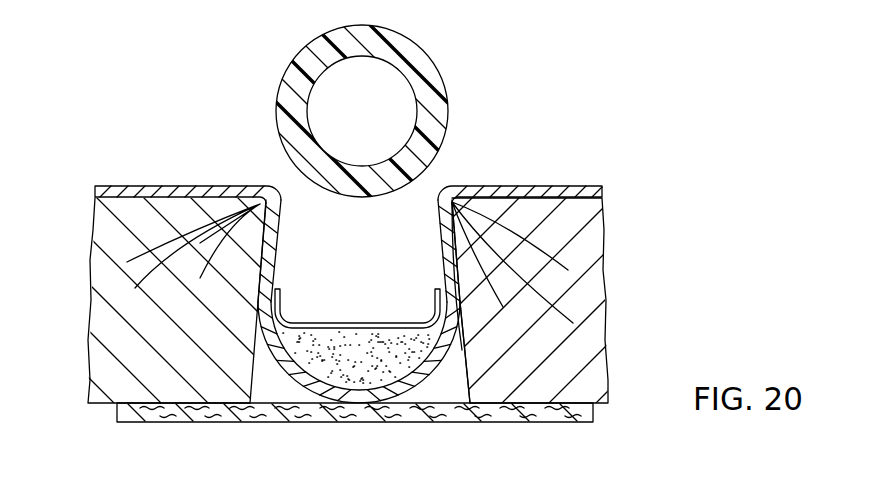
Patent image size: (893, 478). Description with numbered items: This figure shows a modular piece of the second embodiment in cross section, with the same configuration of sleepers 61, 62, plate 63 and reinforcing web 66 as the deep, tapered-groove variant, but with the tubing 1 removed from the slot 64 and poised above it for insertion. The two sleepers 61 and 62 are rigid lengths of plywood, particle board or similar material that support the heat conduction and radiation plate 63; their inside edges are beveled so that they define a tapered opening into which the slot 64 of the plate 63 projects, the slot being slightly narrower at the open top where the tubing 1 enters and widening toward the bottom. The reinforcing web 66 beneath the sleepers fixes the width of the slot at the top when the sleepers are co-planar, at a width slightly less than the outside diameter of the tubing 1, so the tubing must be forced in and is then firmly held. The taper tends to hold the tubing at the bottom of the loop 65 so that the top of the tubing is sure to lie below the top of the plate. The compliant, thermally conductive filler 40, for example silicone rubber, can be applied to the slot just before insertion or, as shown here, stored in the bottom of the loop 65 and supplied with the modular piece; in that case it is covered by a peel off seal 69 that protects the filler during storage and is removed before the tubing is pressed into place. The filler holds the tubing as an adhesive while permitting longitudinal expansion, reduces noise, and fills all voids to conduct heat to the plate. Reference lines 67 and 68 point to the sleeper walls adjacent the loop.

The tubing 1 is at (440, 60).
The filler material 40 is at (402, 370).
The sleeper 61 is at (88, 277).
The sleeper 62 is at (609, 280).
The plate 63 is at (554, 185).
The slot 64 is at (438, 235).
The loop 65 is at (290, 377).
The reinforcing web 66 is at (337, 423).
The left wall interface 67 is at (256, 354).
The right wall interface 68 is at (457, 363).
The peel off seal 69 is at (325, 321).